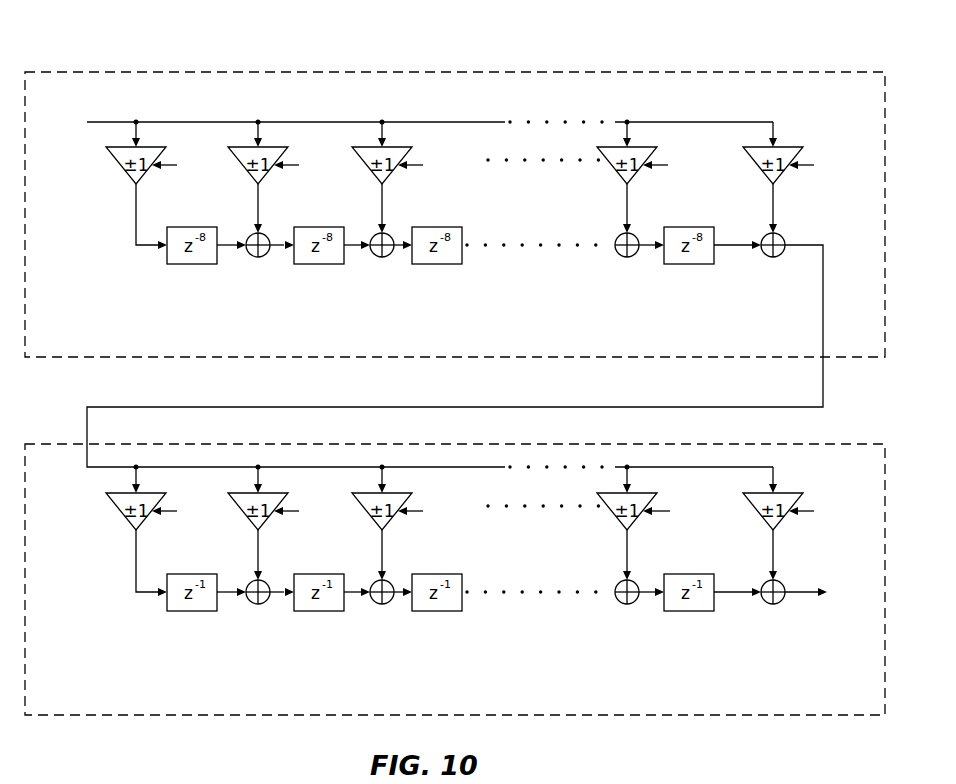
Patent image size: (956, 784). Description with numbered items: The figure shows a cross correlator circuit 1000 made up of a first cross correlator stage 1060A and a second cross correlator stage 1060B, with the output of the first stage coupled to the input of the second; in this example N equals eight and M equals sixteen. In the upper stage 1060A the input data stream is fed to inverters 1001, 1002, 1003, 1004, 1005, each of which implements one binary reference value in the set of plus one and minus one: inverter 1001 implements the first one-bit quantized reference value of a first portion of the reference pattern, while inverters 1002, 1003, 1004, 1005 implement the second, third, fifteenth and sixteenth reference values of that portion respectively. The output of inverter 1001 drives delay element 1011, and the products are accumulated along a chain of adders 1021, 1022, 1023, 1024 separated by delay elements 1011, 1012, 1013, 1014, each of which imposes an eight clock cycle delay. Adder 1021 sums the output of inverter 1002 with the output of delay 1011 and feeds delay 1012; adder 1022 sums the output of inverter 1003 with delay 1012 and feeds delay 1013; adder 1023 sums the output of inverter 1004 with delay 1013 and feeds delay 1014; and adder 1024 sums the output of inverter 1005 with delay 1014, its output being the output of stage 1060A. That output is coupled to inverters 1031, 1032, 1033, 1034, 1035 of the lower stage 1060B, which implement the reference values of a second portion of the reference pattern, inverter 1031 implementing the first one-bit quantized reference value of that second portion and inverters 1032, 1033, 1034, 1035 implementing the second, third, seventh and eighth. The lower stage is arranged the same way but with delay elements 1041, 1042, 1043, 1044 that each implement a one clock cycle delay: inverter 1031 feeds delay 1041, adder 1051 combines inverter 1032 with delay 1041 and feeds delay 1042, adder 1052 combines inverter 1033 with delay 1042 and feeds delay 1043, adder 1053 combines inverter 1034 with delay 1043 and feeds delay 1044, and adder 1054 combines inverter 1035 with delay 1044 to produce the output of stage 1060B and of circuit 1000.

The cross correlator circuit 1000 is at (157, 46).
The inverter 1001 is at (118, 160).
The inverter 1002 is at (245, 165).
The inverter 1003 is at (369, 165).
The inverter 1004 is at (614, 165).
The inverter 1005 is at (760, 165).
The delay element 1011 is at (188, 265).
The delay element 1012 is at (316, 265).
The delay element 1013 is at (455, 265).
The delay element 1014 is at (689, 265).
The adder 1021 is at (258, 257).
The adder 1022 is at (382, 257).
The adder 1023 is at (627, 257).
The adder 1024 is at (773, 257).
The inverter 1031 is at (118, 506).
The inverter 1032 is at (245, 511).
The inverter 1033 is at (369, 511).
The inverter 1034 is at (614, 511).
The inverter 1035 is at (760, 511).
The delay element 1041 is at (188, 612).
The delay element 1042 is at (316, 612).
The delay element 1043 is at (455, 612).
The delay element 1044 is at (689, 612).
The adder 1051 is at (258, 604).
The adder 1052 is at (382, 604).
The adder 1053 is at (627, 604).
The adder 1054 is at (773, 604).
The first cross correlator stage 1060A is at (97, 254).
The second cross correlator stage 1060B is at (97, 584).